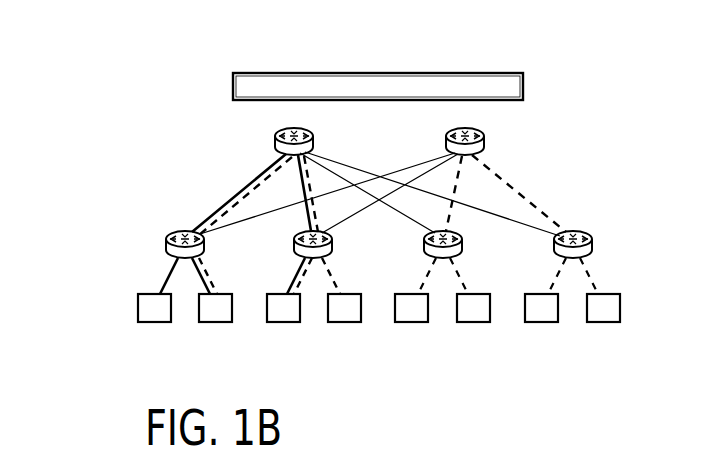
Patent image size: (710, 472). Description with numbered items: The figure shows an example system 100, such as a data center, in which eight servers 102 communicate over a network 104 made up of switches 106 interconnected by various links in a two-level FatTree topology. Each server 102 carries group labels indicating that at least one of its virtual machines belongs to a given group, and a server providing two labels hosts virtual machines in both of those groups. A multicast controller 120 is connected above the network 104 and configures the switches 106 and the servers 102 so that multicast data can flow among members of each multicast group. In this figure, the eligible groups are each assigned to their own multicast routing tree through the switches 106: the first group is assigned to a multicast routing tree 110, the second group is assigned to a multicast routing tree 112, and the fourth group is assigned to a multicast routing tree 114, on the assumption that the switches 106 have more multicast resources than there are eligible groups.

The system 100 is at (556, 148).
The servers 102 is at (118, 303).
The network 104 is at (152, 127).
The switches 106 is at (446, 134).
The multicast routing tree 110 is at (296, 238).
The multicast routing tree 112 is at (270, 168).
The multicast routing tree 114 is at (457, 183).
The multicast controller 120 is at (523, 93).